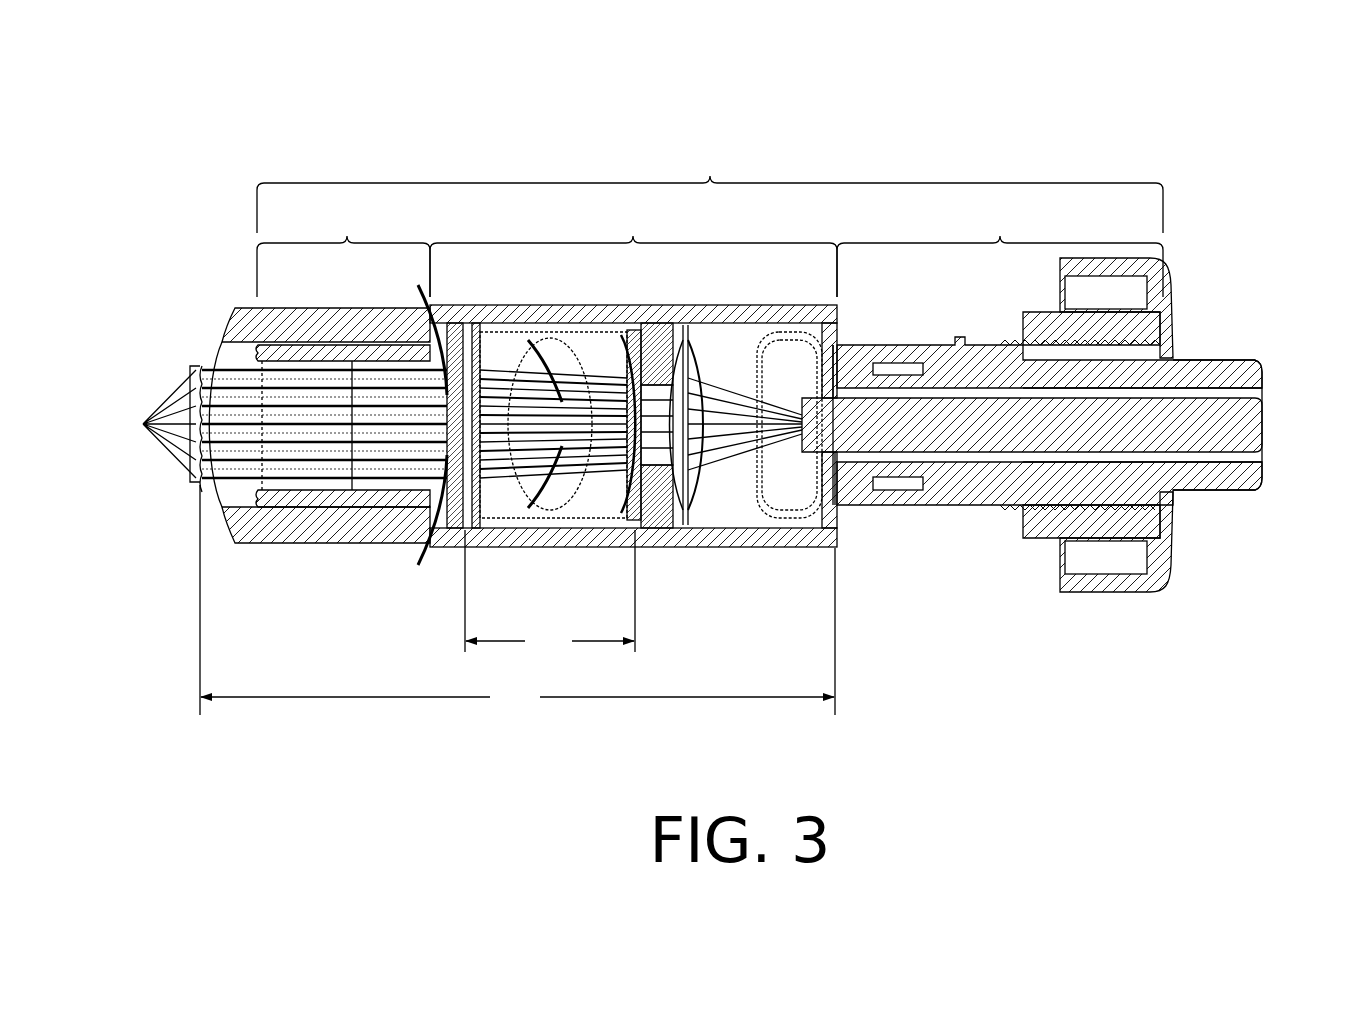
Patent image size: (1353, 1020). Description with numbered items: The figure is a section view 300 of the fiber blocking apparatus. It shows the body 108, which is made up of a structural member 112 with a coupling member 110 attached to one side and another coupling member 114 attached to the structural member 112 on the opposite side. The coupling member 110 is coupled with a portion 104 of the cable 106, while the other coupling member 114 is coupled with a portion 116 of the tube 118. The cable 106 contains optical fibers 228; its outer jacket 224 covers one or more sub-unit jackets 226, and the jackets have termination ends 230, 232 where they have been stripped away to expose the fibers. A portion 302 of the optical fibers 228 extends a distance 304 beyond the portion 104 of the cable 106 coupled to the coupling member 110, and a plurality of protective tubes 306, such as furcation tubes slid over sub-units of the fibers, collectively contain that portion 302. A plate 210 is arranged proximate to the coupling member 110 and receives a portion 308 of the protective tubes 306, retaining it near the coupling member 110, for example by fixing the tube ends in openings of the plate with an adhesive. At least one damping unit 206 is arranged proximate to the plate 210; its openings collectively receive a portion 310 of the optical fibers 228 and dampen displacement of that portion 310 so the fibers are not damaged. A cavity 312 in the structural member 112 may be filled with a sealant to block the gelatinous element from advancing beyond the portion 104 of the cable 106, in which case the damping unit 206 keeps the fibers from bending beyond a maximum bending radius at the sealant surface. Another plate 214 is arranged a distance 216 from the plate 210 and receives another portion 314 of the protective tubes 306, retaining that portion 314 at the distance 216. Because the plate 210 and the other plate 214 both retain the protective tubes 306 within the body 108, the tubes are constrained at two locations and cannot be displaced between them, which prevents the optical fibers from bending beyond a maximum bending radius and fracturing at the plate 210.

The section view 300 is at (262, 130).
The body 108 is at (710, 189).
The other coupling member 114 is at (343, 251).
The structural member 112 is at (633, 376).
The coupling member 110 is at (1000, 251).
The tube 118 is at (235, 308).
The portion of the tube 116 is at (340, 308).
The other portion of the protective tubes 314 is at (418, 285).
The other plate 214 is at (452, 530).
The damping unit 206 is at (673, 530).
The portion of the optical fibers 302 is at (530, 341).
The portion of the protective tubes 308 is at (622, 337).
The plate 210 is at (654, 530).
The portion of the optical fibers 310 is at (688, 334).
The cavity 312 is at (749, 492).
The portion of the cable 104 is at (832, 366).
The optical fibers 228 is at (818, 400).
The sub-unit jackets 226 is at (853, 345).
The termination end 230 is at (935, 490).
The termination end 232 is at (838, 467).
The outer jacket 224 is at (960, 337).
The cable 106 is at (1240, 360).
The protective tubes 306 is at (143, 424).
The distance 304 is at (517, 600).
The distance 216 is at (550, 591).